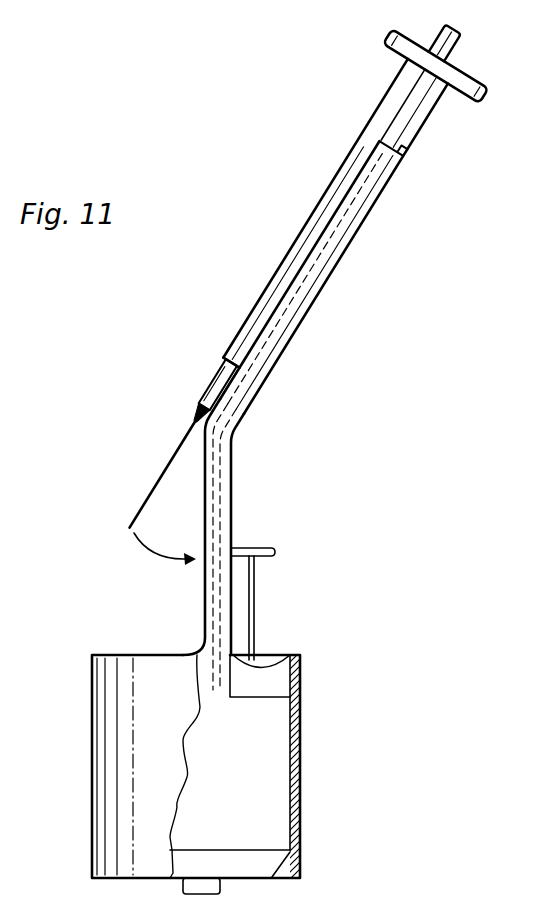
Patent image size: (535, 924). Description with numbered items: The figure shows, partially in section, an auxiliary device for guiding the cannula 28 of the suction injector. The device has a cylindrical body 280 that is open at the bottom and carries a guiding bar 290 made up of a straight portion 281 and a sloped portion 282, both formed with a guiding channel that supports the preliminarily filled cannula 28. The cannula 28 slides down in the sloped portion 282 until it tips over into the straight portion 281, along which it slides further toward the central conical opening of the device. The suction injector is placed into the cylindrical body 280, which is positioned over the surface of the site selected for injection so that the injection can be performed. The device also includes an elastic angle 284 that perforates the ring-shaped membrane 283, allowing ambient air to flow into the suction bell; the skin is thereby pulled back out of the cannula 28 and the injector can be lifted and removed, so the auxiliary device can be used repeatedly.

The cannula 28 is at (214, 375).
The cylindrical body 280 is at (301, 761).
The straight portion 281 is at (226, 484).
The sloped portion 282 is at (337, 255).
The ring-shaped membrane 283 is at (272, 652).
The elastic angle 284 is at (257, 600).
The guiding bar 290 is at (276, 384).